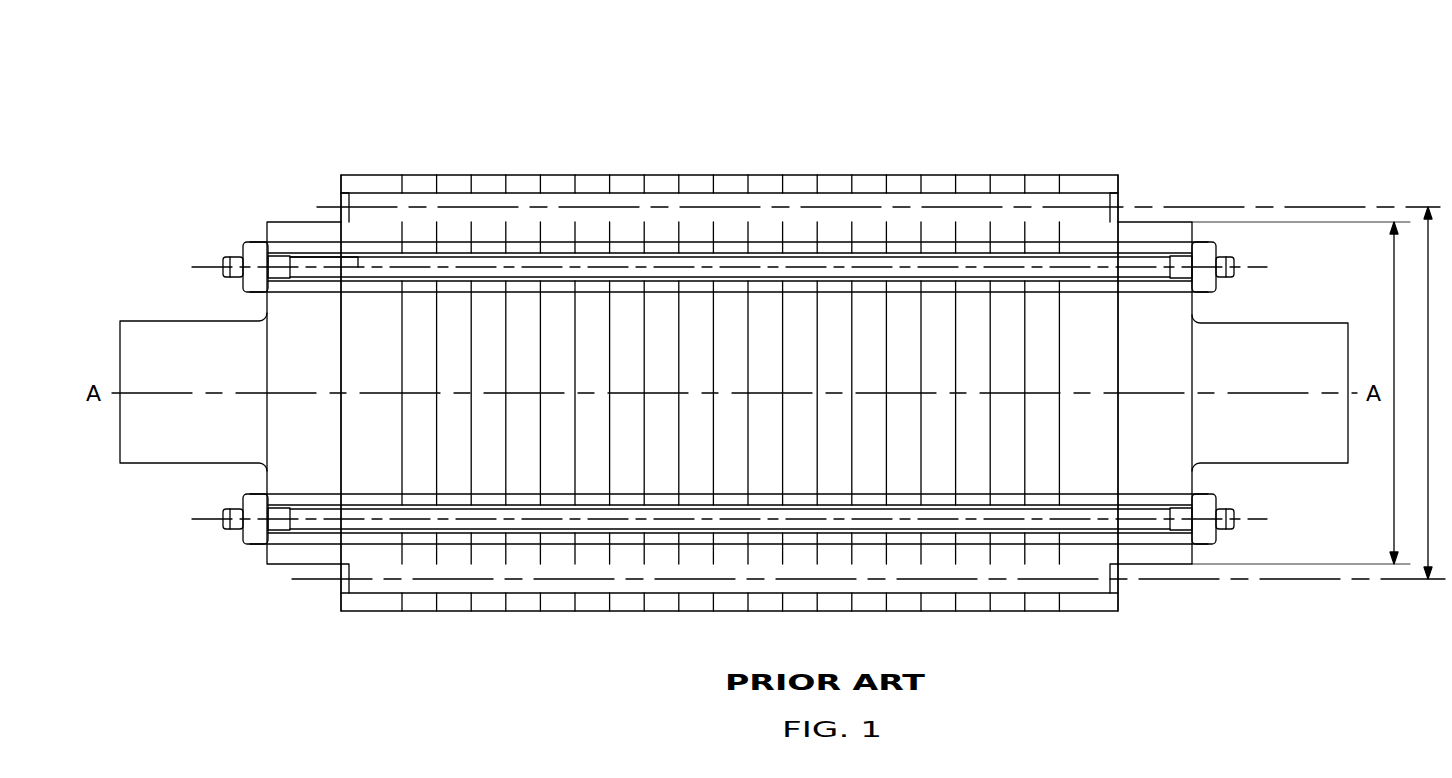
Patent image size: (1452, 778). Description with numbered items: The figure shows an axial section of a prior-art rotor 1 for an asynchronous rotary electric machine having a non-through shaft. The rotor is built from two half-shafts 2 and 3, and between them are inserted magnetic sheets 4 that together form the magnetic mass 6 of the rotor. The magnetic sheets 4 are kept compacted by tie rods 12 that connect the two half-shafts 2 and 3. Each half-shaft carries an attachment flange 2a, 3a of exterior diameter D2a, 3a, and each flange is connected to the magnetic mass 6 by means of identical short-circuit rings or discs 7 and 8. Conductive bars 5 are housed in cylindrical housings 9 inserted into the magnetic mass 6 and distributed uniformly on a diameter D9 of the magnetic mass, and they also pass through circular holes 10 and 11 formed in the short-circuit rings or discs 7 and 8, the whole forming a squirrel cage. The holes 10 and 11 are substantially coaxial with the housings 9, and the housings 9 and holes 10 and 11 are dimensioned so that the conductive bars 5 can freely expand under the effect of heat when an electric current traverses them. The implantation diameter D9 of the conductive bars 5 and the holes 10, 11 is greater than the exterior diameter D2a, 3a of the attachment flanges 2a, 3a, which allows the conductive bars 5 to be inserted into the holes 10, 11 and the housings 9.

The rotor 1 is at (772, 97).
The half-shaft 2 is at (163, 320).
The attachment flange 2a is at (272, 218).
The half-shaft 3 is at (1318, 335).
The attachment flange 3a is at (1165, 218).
The magnetic sheets 4 is at (898, 178).
The conductive bars 5 is at (482, 205).
The magnetic mass 6 is at (648, 160).
The short-circuit ring or disc 7 is at (385, 175).
The short-circuit ring or disc 8 is at (1080, 175).
The housings 9 is at (763, 190).
The holes 10 is at (352, 195).
The holes 11 is at (1115, 200).
The tie rods 12 is at (318, 245).
The exterior diameter of the attachment flanges D2a, 3a is at (1388, 512).
The implantation diameter D9 is at (1425, 527).